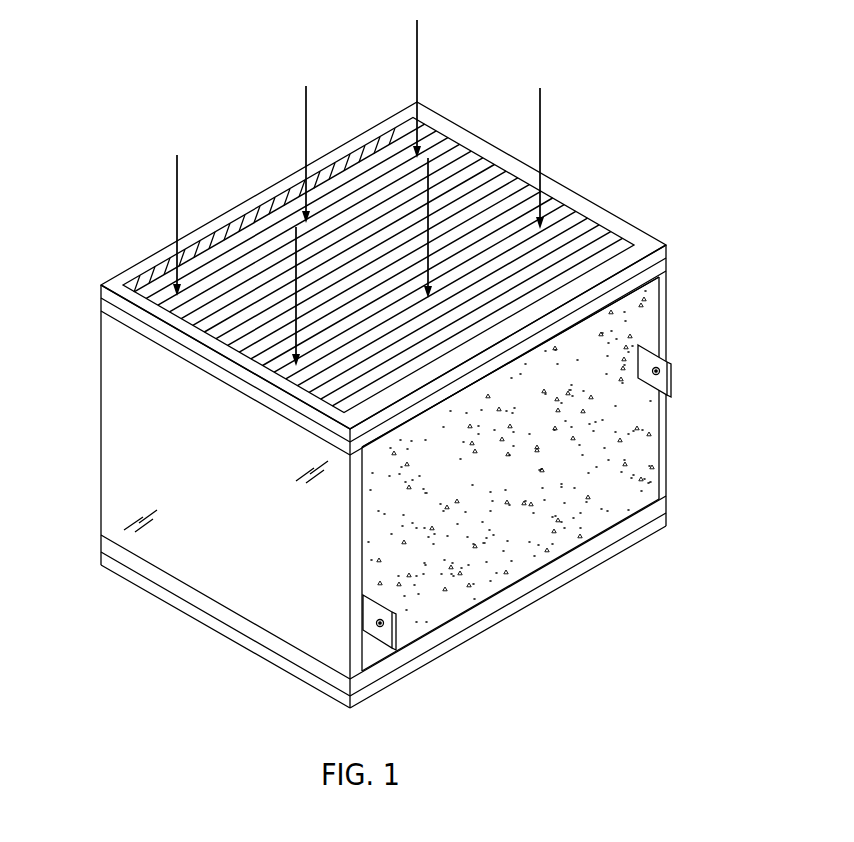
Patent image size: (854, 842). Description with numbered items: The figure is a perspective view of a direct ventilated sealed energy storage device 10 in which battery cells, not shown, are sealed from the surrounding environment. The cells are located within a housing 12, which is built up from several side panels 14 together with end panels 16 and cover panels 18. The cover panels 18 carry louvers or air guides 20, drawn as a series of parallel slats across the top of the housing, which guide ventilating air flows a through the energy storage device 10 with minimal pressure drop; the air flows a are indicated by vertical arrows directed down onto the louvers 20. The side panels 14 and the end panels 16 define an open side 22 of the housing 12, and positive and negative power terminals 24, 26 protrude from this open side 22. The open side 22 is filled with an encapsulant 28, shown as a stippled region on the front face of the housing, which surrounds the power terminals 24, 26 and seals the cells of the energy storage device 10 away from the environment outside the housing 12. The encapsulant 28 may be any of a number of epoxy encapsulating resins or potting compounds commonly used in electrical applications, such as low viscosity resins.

The energy storage device 10 is at (385, 364).
The housing 12 is at (385, 405).
The side panels 14 is at (220, 520).
The end panels 16 is at (300, 420).
The cover panels 18 is at (228, 360).
The louvers or air guides 20 is at (215, 253).
The open side 22 is at (626, 304).
The positive power terminal 24 is at (670, 374).
The negative power terminal 26 is at (376, 622).
The encapsulant 28 is at (507, 484).
The ventilating air flows a is at (418, 62).